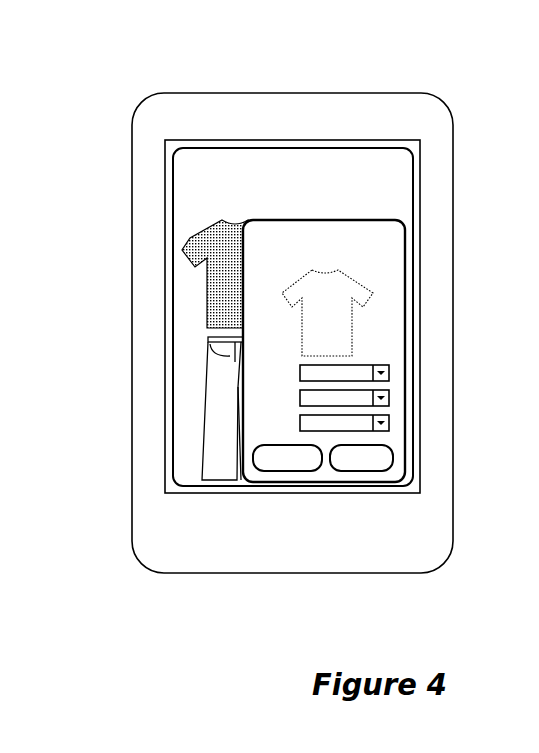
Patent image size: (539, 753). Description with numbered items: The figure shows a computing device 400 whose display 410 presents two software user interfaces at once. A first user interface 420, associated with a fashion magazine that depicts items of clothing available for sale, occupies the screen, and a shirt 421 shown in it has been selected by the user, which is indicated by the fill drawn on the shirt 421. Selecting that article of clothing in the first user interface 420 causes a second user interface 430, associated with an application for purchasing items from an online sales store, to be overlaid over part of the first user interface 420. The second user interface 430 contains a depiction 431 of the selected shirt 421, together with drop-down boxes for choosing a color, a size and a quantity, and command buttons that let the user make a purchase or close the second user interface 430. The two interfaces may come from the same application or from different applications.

The computing device 400 is at (357, 60).
The display 410 is at (453, 460).
The first user interface 420 is at (413, 192).
The shirt 421 is at (183, 246).
The second user interface 430 is at (405, 368).
The depiction of the selected item 431 is at (370, 298).